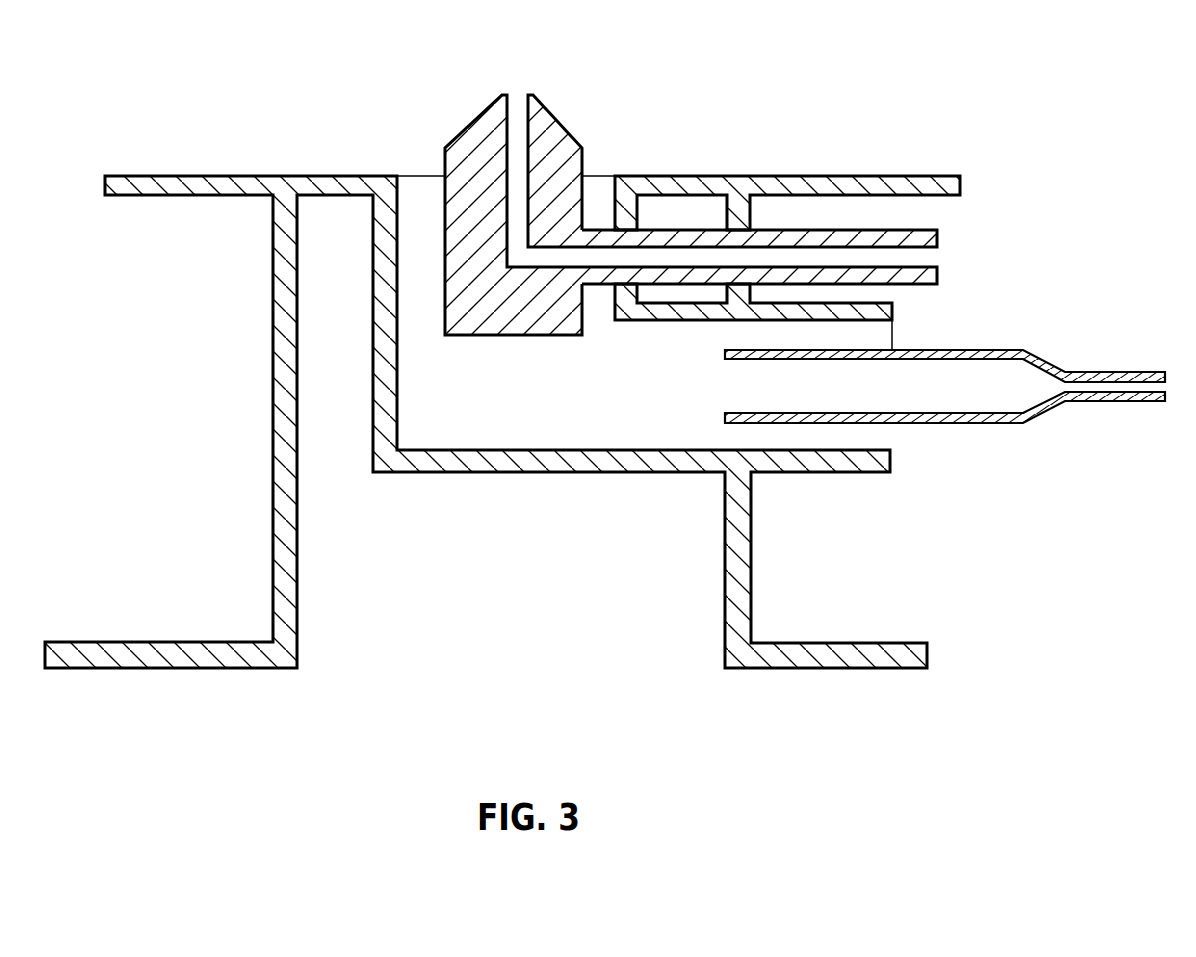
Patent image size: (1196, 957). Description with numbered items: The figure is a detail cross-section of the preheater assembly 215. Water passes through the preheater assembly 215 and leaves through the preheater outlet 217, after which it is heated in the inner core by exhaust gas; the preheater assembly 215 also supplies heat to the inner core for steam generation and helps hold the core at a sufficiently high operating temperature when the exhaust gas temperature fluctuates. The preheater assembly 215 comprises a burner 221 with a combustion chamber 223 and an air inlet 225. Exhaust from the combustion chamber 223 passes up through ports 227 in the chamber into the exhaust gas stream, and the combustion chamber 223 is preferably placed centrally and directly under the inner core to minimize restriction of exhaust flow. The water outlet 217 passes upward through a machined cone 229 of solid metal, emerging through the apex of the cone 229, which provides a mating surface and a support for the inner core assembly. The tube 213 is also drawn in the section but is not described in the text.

The fluid supply tube 213 is at (912, 257).
The preheater assembly 215 is at (788, 88).
The preheater outlet 217 is at (520, 97).
The burner 221 is at (943, 393).
The combustion chamber 223 is at (667, 413).
The air inlet 225 is at (862, 338).
The ports 227 is at (417, 195).
The machined cone 229 is at (562, 120).